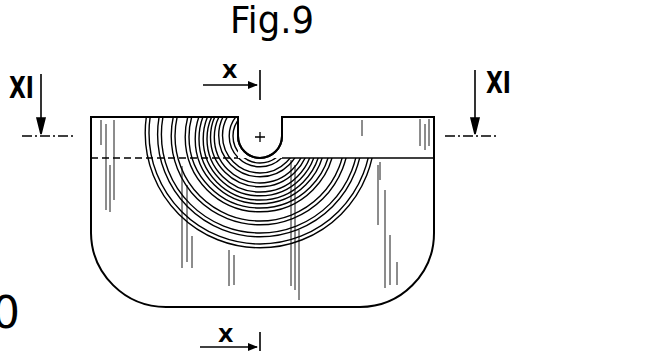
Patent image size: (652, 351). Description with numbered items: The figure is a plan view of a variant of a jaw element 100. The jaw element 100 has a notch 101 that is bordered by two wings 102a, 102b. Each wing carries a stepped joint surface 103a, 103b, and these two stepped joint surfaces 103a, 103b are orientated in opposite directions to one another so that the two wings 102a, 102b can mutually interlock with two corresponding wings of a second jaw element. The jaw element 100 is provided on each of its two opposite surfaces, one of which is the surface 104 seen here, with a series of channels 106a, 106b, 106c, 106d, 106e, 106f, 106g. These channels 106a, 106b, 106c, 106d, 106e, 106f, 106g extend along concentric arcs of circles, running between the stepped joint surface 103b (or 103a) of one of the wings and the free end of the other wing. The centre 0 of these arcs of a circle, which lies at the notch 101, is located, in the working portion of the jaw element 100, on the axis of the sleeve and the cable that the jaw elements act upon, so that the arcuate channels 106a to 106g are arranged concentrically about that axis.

The jaw element 100 is at (439, 186).
The notch 101 is at (273, 140).
The wing 102a is at (118, 117).
The wing 102b is at (352, 117).
The stepped joint surface 103a is at (105, 158).
The stepped joint surface 103b is at (414, 158).
The surface 104 is at (347, 280).
The channel 106a is at (272, 163).
The channel 106b is at (280, 202).
The channel 106c is at (297, 243).
The channel 106d is at (238, 222).
The channel 106e is at (235, 195).
The channel 106f is at (228, 196).
The channel 106g is at (208, 230).
The centre 0 is at (262, 135).